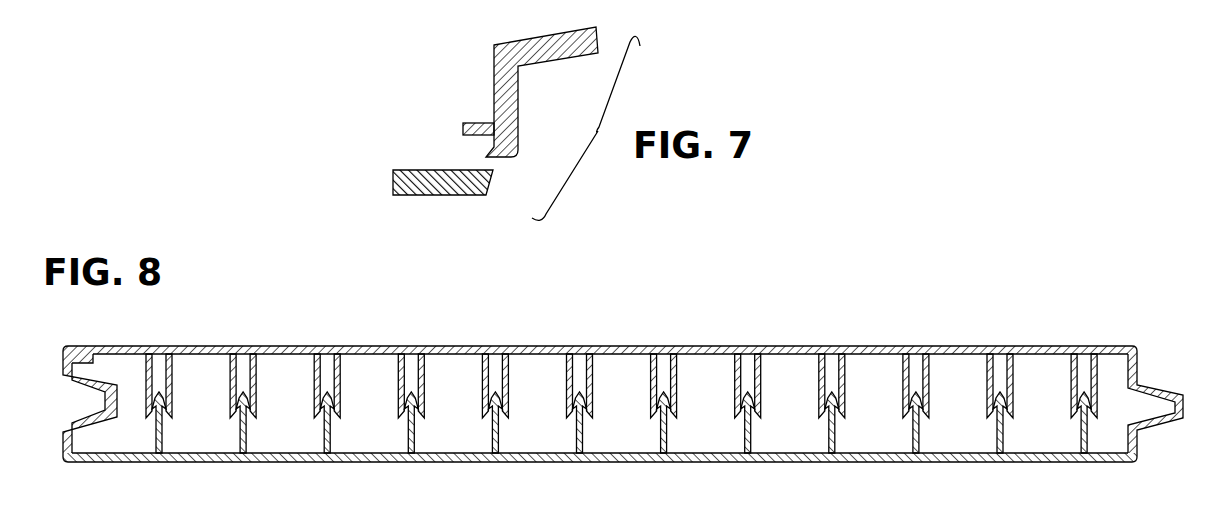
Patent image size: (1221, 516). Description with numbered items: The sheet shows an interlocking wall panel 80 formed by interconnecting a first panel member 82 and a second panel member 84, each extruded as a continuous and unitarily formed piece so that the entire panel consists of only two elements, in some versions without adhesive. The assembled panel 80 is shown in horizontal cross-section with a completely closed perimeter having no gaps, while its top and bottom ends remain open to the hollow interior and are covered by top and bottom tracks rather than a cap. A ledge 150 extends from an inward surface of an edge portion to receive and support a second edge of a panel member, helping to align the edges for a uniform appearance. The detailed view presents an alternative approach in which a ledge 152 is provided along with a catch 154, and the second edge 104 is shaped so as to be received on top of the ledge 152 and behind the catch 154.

In FIG. 8, the wall panel 80 is at (1021, 300).
In FIG. 8, the first panel member 82 is at (625, 345).
In FIG. 8, the second panel member 84 is at (683, 463).
In FIG. 8, the ledge 150 is at (92, 365).
In FIG. 7, the ledge 152 is at (473, 121).
In FIG. 7, the catch 154 is at (488, 158).
In FIG. 7, the second edge 104 is at (493, 177).